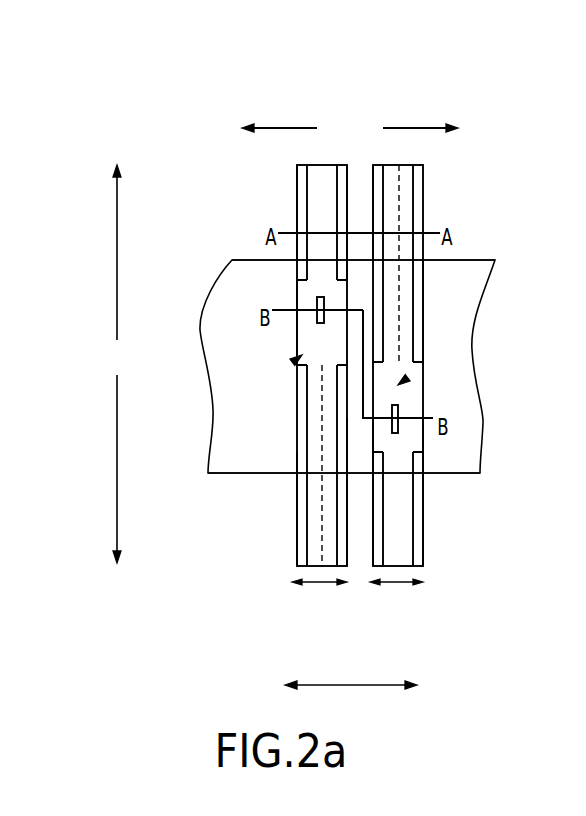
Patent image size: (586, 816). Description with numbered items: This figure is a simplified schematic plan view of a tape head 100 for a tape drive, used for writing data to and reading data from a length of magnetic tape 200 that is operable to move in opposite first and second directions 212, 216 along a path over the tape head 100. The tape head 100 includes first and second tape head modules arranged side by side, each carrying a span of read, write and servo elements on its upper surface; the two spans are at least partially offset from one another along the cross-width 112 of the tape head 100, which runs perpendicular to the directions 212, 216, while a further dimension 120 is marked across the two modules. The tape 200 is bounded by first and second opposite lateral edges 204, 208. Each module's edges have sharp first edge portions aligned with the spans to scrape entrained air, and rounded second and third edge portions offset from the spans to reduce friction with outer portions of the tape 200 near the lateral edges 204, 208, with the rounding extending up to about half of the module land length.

The tape head 100 is at (142, 142).
The cross-width 112 is at (117, 364).
The overall width 120 is at (351, 674).
The magnetic tape 200 is at (212, 440).
The first lateral edge of tape 204 is at (235, 473).
The second lateral edge of tape 208 is at (243, 258).
The first direction 212 is at (297, 127).
The second direction 216 is at (405, 127).